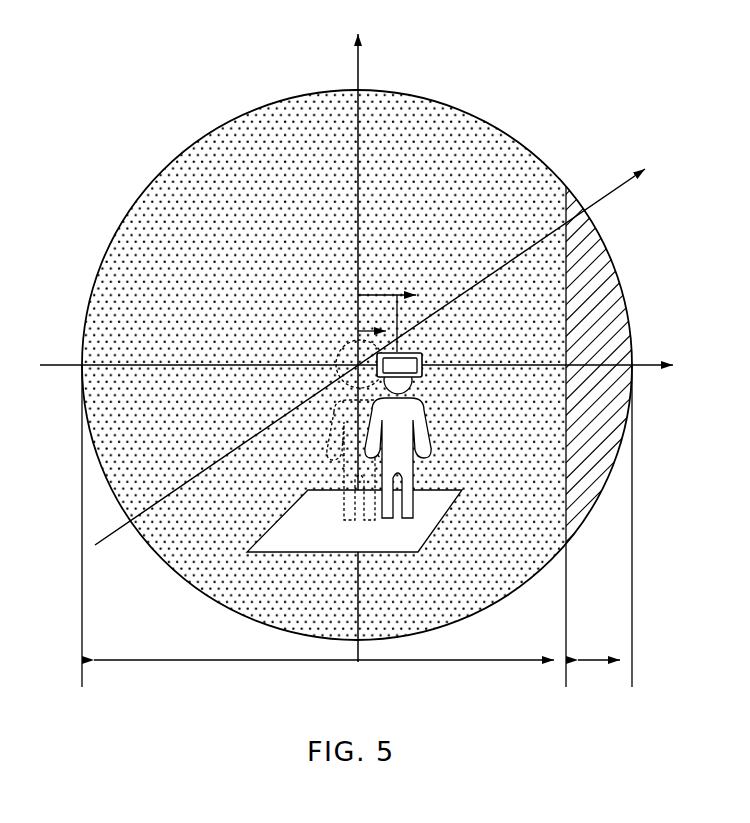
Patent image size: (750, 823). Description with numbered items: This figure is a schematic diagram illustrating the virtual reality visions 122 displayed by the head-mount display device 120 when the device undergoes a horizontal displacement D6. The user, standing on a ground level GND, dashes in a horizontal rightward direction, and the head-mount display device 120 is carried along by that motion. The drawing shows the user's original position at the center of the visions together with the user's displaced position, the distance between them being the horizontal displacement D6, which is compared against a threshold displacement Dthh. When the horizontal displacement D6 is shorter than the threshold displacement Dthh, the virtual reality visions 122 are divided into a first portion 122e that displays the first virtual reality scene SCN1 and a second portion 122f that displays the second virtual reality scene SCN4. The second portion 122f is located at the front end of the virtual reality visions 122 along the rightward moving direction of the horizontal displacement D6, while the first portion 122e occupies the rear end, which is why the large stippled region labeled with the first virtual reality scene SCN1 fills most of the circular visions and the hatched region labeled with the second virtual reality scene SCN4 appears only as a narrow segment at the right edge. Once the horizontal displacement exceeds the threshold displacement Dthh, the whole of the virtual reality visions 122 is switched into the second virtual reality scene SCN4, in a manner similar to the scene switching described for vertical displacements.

The virtual reality visions 122 is at (500, 131).
The head-mount display device 120 is at (421, 356).
The first portion 122e is at (324, 675).
The second portion 122f is at (598, 675).
The ground level GND is at (450, 505).
The first virtual reality scene SCN1 is at (324, 365).
The second virtual reality scene SCN4 is at (617, 337).
The threshold displacement Dthh is at (387, 312).
The horizontal displacement D6 is at (375, 319).